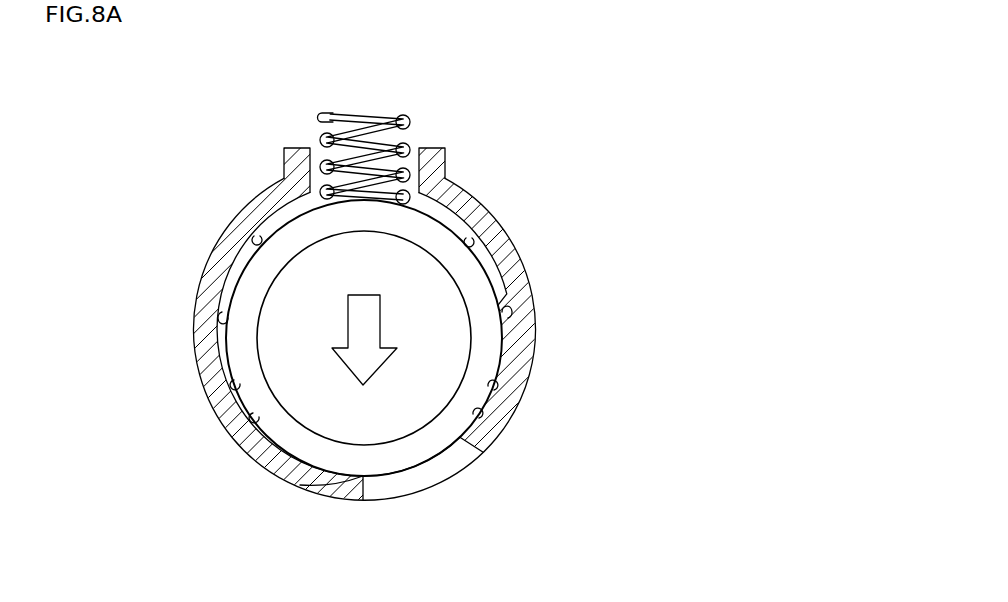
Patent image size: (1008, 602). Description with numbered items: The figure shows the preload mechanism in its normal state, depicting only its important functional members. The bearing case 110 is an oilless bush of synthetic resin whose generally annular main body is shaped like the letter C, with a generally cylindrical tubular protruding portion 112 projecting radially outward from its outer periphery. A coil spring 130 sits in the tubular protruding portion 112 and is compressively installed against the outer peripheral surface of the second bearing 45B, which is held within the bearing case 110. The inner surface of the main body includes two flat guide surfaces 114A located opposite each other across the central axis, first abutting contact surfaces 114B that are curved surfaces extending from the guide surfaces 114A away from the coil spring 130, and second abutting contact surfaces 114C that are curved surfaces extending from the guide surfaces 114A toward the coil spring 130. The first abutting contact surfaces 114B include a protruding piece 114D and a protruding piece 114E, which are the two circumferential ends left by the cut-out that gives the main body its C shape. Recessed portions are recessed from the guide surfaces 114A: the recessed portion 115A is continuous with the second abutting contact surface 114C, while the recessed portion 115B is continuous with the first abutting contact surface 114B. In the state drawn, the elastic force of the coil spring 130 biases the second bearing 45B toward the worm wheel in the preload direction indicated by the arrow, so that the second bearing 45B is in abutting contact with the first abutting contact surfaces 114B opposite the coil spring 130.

The bearing case 110 is at (258, 121).
The tubular protruding portion 112 is at (447, 165).
The coil spring 130 is at (405, 114).
The second bearing 45B is at (490, 262).
The guide surfaces 114A is at (238, 384).
The first abutting contact surfaces 114B is at (257, 417).
The second abutting contact surfaces 114C is at (258, 232).
The protruding piece 114D is at (310, 492).
The protruding piece 114E is at (443, 486).
The recessed portion 115A is at (224, 316).
The recessed portion 115B is at (507, 316).